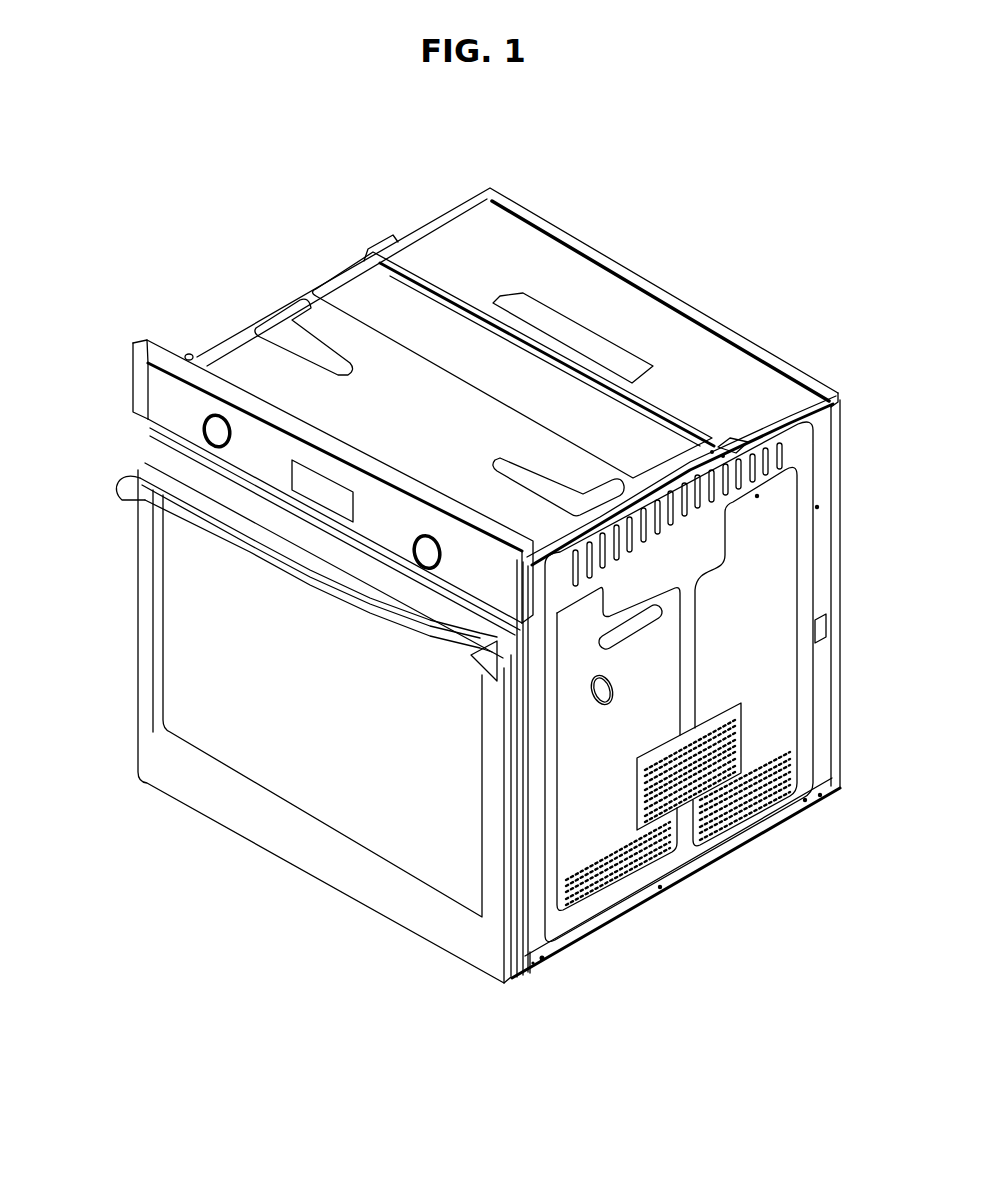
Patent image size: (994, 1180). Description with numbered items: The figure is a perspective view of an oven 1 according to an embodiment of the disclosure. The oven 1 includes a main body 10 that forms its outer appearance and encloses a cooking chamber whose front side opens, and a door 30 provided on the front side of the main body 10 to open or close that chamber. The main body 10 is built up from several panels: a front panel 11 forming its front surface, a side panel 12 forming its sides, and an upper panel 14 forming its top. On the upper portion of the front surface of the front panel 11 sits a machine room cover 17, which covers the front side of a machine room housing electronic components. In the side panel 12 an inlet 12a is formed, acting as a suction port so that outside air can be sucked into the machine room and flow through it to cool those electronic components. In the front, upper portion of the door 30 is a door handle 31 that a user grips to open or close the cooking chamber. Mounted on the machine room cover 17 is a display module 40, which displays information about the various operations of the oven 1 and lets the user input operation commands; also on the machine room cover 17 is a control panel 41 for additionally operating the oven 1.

The oven 1 is at (262, 258).
The main body 10 is at (693, 295).
The front panel 11 is at (510, 838).
The side panel 12 is at (790, 582).
The inlet 12a is at (792, 458).
The upper panel 14 is at (450, 330).
The machine room cover 17 is at (157, 383).
The door 30 is at (125, 637).
The door handle 31 is at (263, 541).
The display module 40 is at (275, 475).
The control panel 41 is at (203, 430).